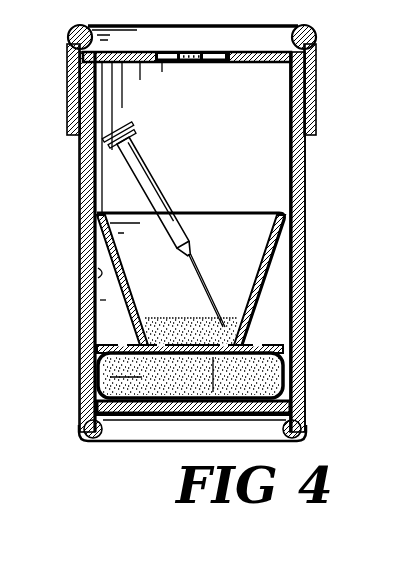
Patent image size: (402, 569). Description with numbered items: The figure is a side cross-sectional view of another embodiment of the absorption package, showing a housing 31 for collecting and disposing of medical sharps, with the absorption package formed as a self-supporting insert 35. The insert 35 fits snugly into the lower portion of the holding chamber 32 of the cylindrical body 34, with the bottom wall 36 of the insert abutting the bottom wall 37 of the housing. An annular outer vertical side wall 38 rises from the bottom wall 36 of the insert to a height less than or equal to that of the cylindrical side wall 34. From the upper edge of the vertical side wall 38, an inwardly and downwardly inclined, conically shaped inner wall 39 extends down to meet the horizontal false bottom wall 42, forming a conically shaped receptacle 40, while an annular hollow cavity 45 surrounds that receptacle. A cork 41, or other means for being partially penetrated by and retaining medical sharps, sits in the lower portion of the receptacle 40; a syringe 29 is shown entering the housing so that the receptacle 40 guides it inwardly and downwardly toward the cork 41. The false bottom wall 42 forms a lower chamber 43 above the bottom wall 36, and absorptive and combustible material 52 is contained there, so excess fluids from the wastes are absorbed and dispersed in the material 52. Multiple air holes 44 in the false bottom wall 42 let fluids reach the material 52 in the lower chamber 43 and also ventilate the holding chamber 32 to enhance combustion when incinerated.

The housing 31 is at (70, 191).
The holding chamber 32 is at (187, 141).
The syringe 29 is at (157, 198).
The cylindrical body 34 is at (80, 240).
The self-supporting insert 35 is at (243, 204).
The inner wall 39 is at (258, 263).
The outer vertical side wall 38 is at (82, 290).
The conically shaped receptacle 40 is at (167, 286).
The cork 41 is at (158, 320).
The annular hollow cavity 45 is at (81, 327).
The air holes 44 is at (255, 342).
The lower chamber 43 is at (82, 373).
The absorptive and combustible material 52 is at (305, 398).
The bottom wall of the insert 36 is at (165, 420).
The bottom wall of the housing 37 is at (130, 418).
The false bottom wall 42 is at (226, 420).